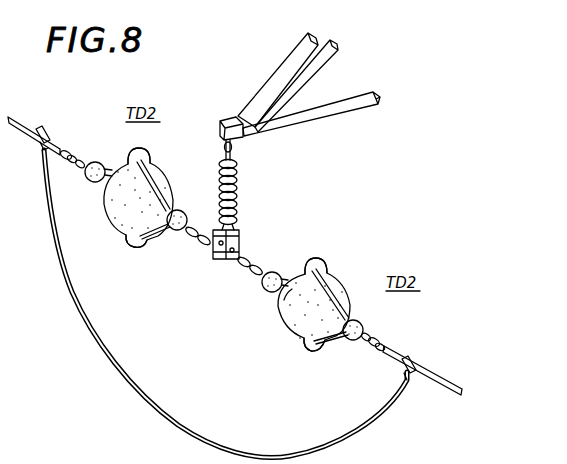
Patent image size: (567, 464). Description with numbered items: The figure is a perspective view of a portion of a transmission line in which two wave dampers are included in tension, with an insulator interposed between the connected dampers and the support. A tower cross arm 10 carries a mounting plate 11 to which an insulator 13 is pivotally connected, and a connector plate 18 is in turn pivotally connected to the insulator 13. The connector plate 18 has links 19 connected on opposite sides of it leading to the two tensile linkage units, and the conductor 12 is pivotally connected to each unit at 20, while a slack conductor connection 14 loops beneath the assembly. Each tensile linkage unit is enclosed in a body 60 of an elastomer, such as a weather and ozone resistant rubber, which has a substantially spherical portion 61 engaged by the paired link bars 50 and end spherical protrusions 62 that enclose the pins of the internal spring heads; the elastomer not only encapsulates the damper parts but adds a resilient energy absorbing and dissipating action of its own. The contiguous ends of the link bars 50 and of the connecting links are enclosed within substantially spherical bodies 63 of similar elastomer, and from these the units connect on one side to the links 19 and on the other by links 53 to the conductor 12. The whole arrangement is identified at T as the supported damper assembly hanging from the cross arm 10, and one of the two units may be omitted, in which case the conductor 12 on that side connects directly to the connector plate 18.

The tower cross arm 10 is at (318, 112).
The mounting plate 11 is at (234, 118).
The conductor 12 is at (26, 120).
The insulator 13 is at (233, 176).
The slack conductor connection 14 is at (116, 372).
The connector plate 18 is at (241, 247).
The links 19 is at (203, 245).
The pivotal connection 20 is at (81, 170).
The link bars 50 is at (156, 188).
The links 53 is at (70, 150).
The body 60 is at (110, 210).
The substantially spherical portion 61 is at (287, 302).
The end spherical protrusions 62 is at (134, 151).
The substantially spherical bodies 63 is at (89, 180).
The tweezers T is at (381, 67).